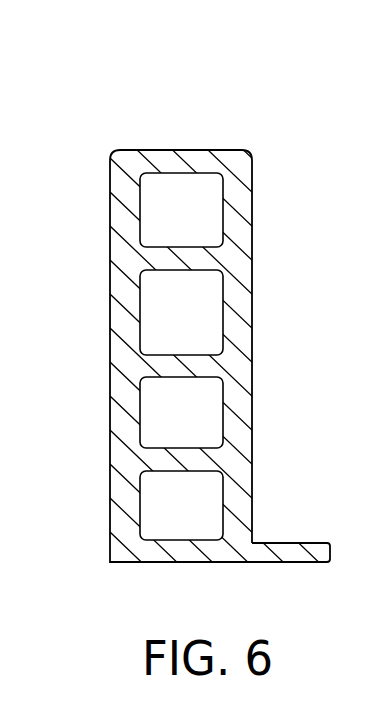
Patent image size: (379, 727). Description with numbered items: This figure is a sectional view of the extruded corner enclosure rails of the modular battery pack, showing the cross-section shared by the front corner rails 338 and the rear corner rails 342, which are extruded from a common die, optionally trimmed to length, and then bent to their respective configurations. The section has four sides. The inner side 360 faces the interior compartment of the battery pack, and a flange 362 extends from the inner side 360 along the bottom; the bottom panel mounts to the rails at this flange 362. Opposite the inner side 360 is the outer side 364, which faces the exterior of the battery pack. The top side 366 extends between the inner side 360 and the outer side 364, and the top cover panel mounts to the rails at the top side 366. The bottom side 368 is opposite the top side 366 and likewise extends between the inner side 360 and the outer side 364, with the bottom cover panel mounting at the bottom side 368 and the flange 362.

The front corner rail 338 is at (146, 80).
The rear corner rail 342 is at (184, 374).
The inner side 360 is at (253, 253).
The flange 362 is at (308, 543).
The outer side 364 is at (112, 292).
The top side 366 is at (212, 147).
The bottom side 368 is at (133, 562).